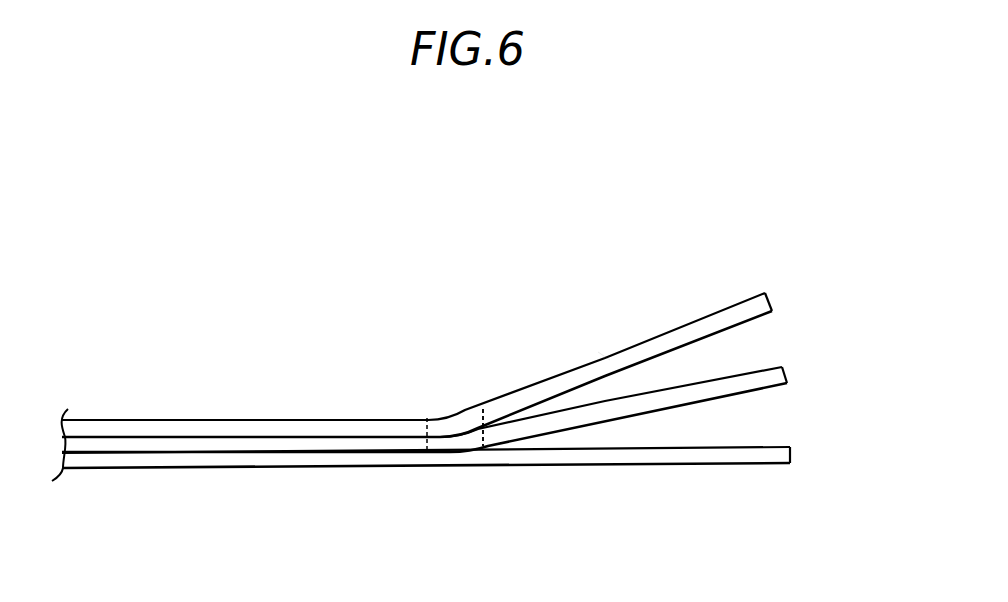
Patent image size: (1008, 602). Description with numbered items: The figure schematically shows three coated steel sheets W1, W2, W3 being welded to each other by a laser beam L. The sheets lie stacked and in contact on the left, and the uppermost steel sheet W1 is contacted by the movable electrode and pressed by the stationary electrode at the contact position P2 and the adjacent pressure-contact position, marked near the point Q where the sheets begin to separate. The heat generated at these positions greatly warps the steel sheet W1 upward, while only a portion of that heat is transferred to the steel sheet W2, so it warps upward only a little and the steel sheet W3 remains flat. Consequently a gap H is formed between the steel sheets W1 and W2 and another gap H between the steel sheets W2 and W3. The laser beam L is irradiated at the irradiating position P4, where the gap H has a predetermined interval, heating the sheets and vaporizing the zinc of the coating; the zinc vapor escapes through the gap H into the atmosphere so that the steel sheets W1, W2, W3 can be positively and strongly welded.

The uppermost steel sheet W1 is at (774, 302).
The steel sheet W2 is at (789, 375).
The steel sheet W3 is at (792, 455).
The bending point Q is at (428, 421).
The contact position P2 is at (434, 418).
The irradiating position P4 is at (602, 358).
The laser beam L is at (604, 350).
The gap H is at (605, 380).